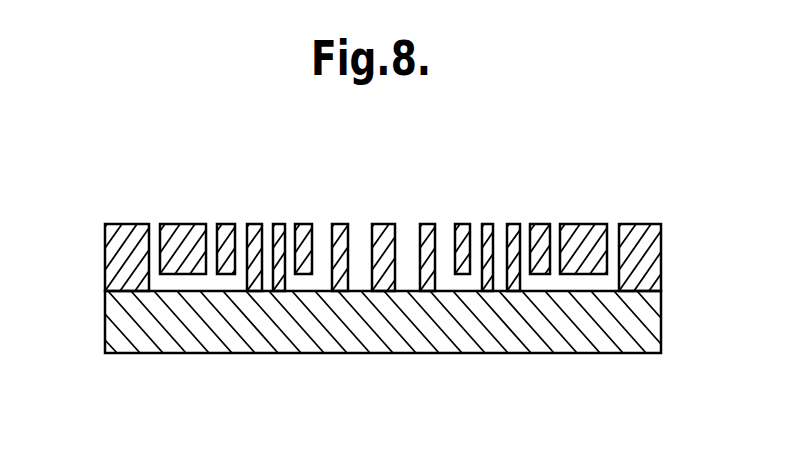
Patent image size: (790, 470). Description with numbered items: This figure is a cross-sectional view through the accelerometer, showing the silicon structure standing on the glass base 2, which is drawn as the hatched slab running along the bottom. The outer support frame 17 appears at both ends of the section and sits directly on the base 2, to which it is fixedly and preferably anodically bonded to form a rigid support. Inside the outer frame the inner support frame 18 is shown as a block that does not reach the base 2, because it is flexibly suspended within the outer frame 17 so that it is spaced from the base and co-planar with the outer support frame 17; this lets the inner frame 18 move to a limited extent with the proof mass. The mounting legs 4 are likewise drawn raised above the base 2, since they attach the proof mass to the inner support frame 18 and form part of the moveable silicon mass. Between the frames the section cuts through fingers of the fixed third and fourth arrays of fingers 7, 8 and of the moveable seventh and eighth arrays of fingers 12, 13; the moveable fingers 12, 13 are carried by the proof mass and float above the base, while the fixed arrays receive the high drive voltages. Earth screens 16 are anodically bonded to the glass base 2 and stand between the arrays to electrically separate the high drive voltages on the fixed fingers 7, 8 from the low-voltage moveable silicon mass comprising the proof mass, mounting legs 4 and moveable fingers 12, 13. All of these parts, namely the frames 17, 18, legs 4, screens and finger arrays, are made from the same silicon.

The base 2 is at (600, 340).
The mounting legs 4 is at (218, 229).
The third array of fingers 7 is at (428, 223).
The fourth array of fingers 8 is at (278, 223).
The seventh array of fingers 12 is at (462, 223).
The eighth array of fingers 13 is at (303, 223).
The earth screens 16 is at (253, 223).
The outer support frame 17 is at (113, 255).
The inner support frame 18 is at (182, 229).